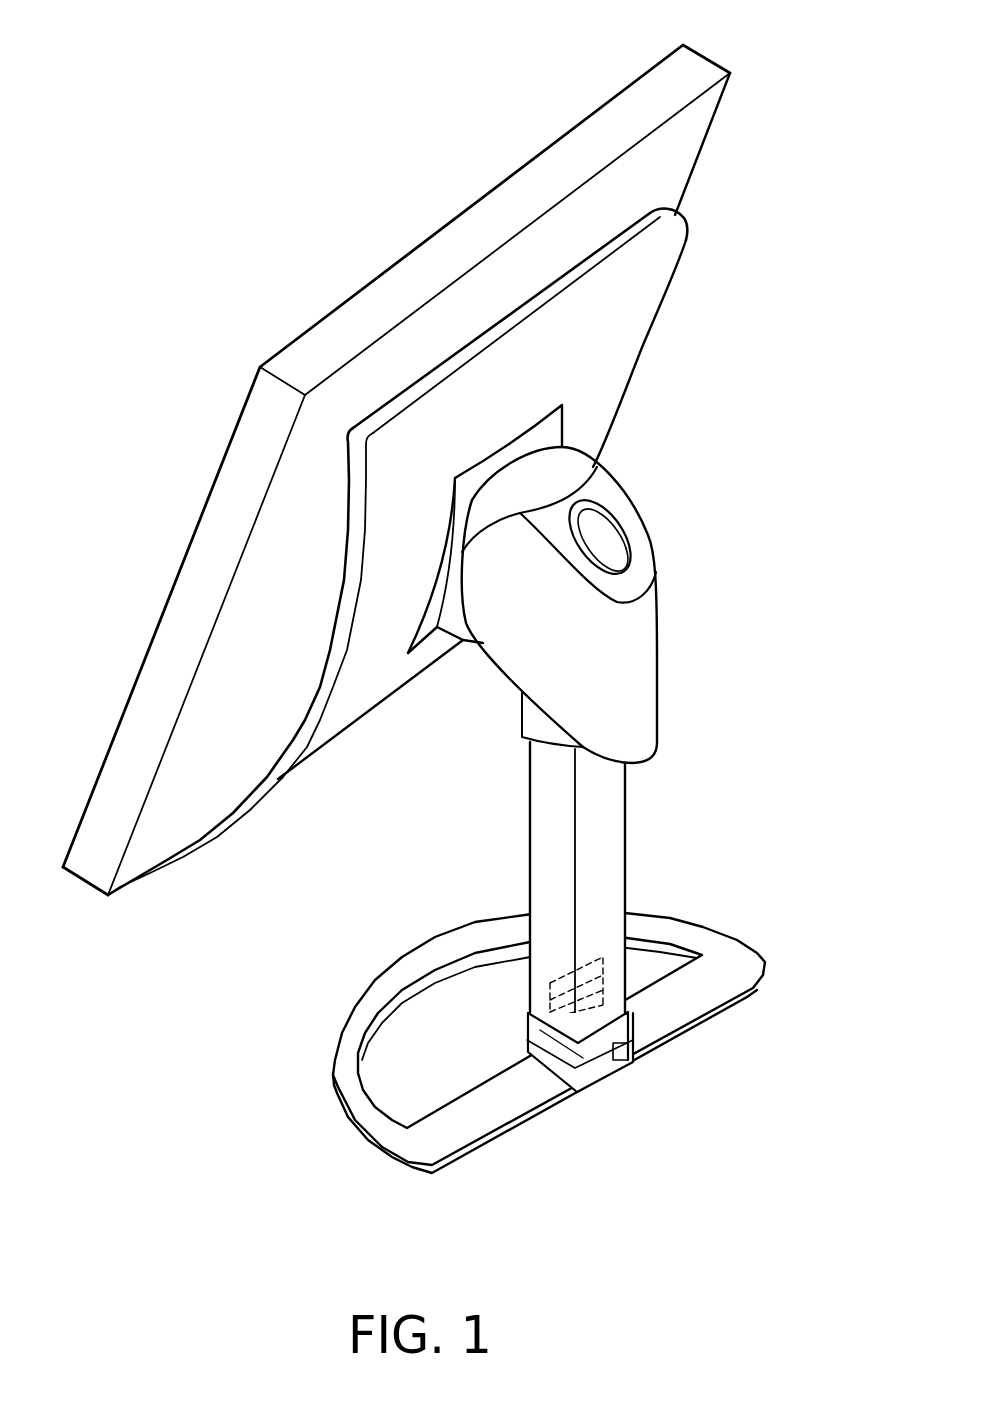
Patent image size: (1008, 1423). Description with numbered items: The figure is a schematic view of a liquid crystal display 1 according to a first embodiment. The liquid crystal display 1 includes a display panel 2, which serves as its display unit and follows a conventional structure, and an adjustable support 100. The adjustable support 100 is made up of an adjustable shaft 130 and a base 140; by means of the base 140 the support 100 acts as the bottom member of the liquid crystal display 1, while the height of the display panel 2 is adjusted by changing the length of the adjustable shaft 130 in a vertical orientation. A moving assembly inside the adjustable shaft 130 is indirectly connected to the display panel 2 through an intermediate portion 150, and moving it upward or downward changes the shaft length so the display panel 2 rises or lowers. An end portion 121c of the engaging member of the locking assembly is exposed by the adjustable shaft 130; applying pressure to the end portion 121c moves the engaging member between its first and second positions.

The liquid crystal display 1 is at (467, 586).
The display panel 2 is at (233, 517).
The adjustable support 100 is at (619, 810).
The adjustable shaft 130 is at (530, 858).
The base 140 is at (733, 967).
The intermediate portion 150 is at (627, 672).
The end portion 121c is at (630, 1060).